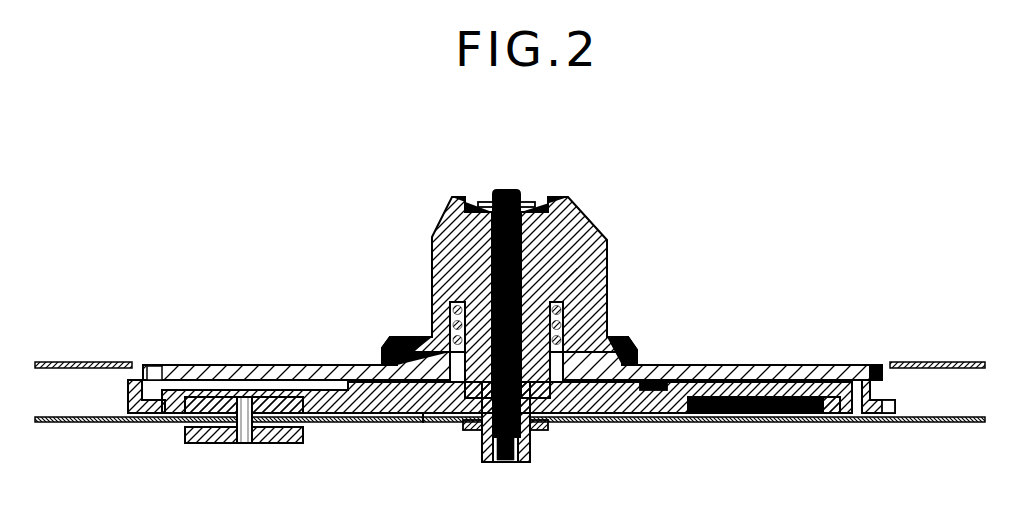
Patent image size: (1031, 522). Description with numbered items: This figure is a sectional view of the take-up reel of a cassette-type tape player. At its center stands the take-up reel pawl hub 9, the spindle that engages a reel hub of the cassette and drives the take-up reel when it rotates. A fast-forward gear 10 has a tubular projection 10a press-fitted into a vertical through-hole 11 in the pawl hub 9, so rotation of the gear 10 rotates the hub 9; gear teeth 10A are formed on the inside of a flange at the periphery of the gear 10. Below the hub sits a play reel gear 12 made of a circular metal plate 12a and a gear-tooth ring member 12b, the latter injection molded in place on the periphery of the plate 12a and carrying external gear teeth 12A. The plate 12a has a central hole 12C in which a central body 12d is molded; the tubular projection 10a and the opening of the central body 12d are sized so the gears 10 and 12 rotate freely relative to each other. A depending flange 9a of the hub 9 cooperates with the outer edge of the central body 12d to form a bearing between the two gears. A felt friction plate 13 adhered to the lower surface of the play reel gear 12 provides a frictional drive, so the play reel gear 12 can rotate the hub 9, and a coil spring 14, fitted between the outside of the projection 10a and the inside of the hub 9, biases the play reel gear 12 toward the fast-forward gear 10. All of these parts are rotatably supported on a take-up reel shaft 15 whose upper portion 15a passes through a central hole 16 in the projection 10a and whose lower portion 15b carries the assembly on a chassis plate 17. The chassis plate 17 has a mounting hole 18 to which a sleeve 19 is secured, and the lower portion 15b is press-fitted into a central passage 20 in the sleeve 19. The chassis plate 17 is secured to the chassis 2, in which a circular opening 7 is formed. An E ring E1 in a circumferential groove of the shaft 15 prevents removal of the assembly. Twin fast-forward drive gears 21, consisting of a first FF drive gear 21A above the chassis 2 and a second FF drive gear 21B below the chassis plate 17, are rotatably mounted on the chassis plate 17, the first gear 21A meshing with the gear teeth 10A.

The chassis 2 is at (916, 362).
The circular opening 7 is at (886, 365).
The take-up reel pawl hub 9 is at (586, 215).
The depending flange 9a is at (381, 359).
The fast-forward reel gear 10 is at (593, 400).
The tubular projection 10a is at (514, 272).
The gear teeth 10A is at (830, 408).
The vertical through-hole 11 is at (545, 232).
The play reel gear 12 is at (707, 364).
The circular metal plate 12a is at (770, 373).
The gear-tooth ring member 12b is at (870, 415).
The central hole 12C is at (423, 422).
The central body 12d is at (432, 345).
The external gear teeth 12A is at (133, 405).
The friction plate 13 is at (653, 383).
The coil spring 14 is at (558, 326).
The take-up reel shaft 15 is at (495, 284).
The upper portion 15a is at (496, 238).
The lower portion 15b is at (508, 458).
The central hole 16 is at (557, 274).
The chassis plate 17 is at (920, 424).
The mounting hole 18 is at (535, 428).
The sleeve 19 is at (480, 426).
The central passage 20 is at (495, 458).
The twin fast-forward drive gears 21 is at (251, 444).
The first FF drive gear 21A is at (218, 406).
The second FF drive gear 21B is at (210, 437).
The E ring E1 is at (490, 204).